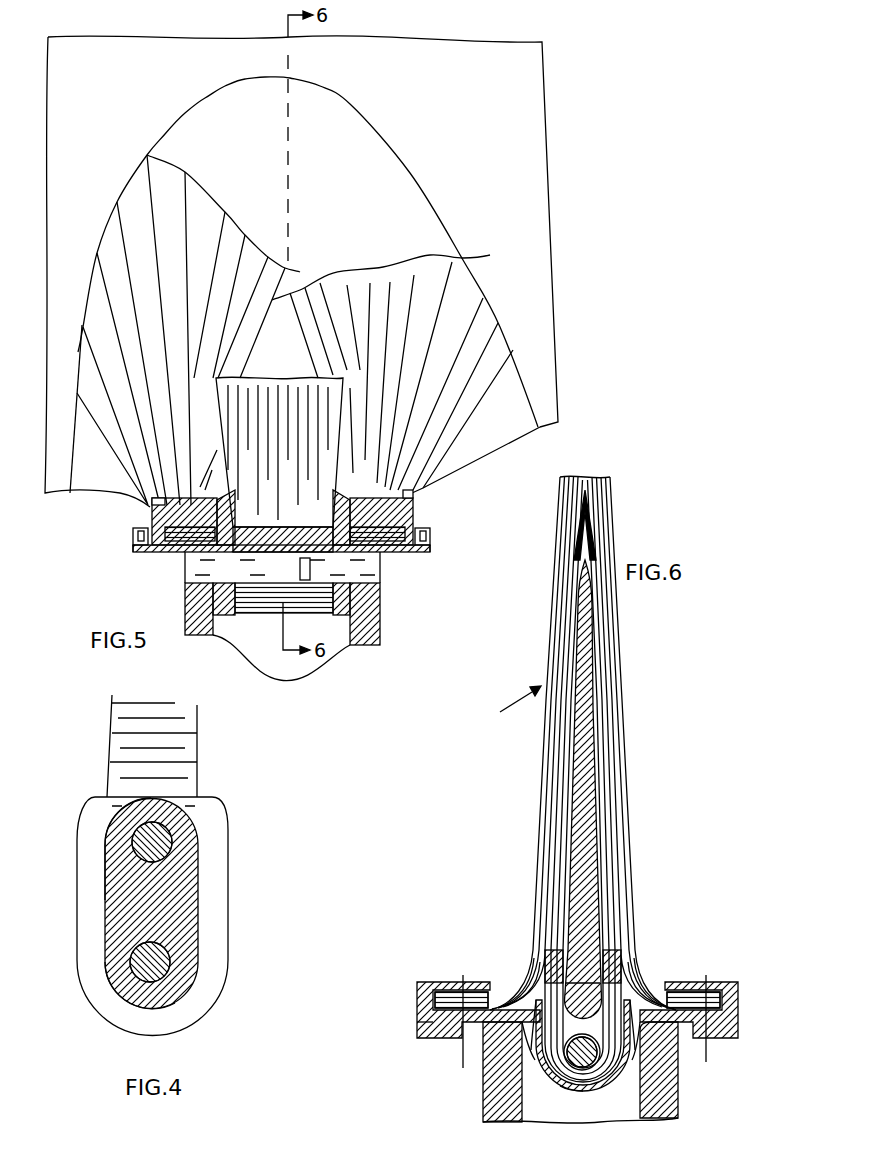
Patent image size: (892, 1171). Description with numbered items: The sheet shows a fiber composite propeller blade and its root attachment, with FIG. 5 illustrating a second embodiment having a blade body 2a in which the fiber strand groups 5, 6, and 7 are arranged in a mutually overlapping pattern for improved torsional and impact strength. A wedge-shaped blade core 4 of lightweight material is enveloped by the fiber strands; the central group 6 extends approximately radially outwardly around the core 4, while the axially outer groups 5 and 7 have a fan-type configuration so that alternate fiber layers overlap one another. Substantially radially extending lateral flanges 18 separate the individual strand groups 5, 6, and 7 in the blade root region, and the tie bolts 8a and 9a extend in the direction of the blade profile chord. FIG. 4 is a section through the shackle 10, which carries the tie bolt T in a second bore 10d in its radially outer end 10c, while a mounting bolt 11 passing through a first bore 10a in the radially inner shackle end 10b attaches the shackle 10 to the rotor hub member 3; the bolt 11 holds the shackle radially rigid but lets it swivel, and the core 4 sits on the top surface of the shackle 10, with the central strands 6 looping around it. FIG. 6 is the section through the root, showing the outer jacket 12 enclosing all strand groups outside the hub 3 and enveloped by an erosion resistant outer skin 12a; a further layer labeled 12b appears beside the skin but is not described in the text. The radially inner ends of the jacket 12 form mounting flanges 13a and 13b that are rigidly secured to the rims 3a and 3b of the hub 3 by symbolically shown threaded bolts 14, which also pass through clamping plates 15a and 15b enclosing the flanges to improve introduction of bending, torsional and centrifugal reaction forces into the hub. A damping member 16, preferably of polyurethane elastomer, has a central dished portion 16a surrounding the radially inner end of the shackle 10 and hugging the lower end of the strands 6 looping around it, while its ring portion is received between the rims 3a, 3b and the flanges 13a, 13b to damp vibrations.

In FIG. 5, the blade body 2a is at (545, 180).
In FIG. 6, the blade body 2a is at (543, 608).
In FIG. 5, the rotor hub member 3 is at (372, 638).
In FIG. 6, the rotor hub member 3 is at (490, 1095).
In FIG. 6, the rim of the rotor hub member 3a is at (718, 1032).
In FIG. 6, the rim of the rotor hub member 3b is at (443, 1033).
In FIG. 5, the blade core 4 is at (410, 175).
In FIG. 4, the blade core 4 is at (195, 739).
In FIG. 6, the blade core 4 is at (590, 806).
In FIG. 5, the group of fiber strands 5 is at (143, 287).
In FIG. 6, the group of fiber strands 5 is at (612, 843).
In FIG. 5, the central group of fiber strands 6 is at (280, 428).
In FIG. 6, the central group of fiber strands 6 is at (612, 913).
In FIG. 5, the group of fiber strands 7 is at (467, 280).
In FIG. 6, the group of fiber strands 7 is at (583, 1063).
In FIG. 5, the tie bolt 8a is at (185, 548).
In FIG. 6, the tie bolt 8a is at (638, 960).
In FIG. 5, the tie bolt 9a is at (414, 515).
In FIG. 6, the tie bolt 9a is at (583, 1025).
In FIG. 4, the shackle 10 is at (190, 930).
In FIG. 6, the shackle 10 is at (668, 1062).
In FIG. 4, the first bore 10a is at (145, 1005).
In FIG. 4, the radially inner shackle end 10b is at (125, 975).
In FIG. 4, the radially outer end of the shackle 10c is at (133, 817).
In FIG. 4, the second bore 10d is at (130, 858).
In FIG. 5, the mounting bolt 11 is at (372, 568).
In FIG. 4, the mounting bolt 11 is at (168, 978).
In FIG. 6, the mounting bolt 11 is at (556, 1080).
In FIG. 6, the outer jacket 12 is at (619, 702).
In FIG. 6, the outer skin 12a is at (540, 808).
In FIG. 6, the skin side 12b is at (627, 742).
In FIG. 6, the mounting flange 13a is at (682, 990).
In FIG. 6, the mounting flange 13b is at (480, 995).
In FIG. 6, the threaded bolts 14 is at (463, 1068).
In FIG. 6, the clamping plate 15a is at (728, 982).
In FIG. 6, the clamping plate 15b is at (420, 982).
In FIG. 5, the damping member 16 is at (415, 552).
In FIG. 6, the damping member 16 is at (430, 1030).
In FIG. 6, the central dished portion 16a is at (595, 1093).
In FIG. 5, the lateral flanges 18 is at (150, 543).
In FIG. 4, the lateral flanges 18 is at (190, 1022).
In FIG. 4, the tie bolt T is at (170, 836).